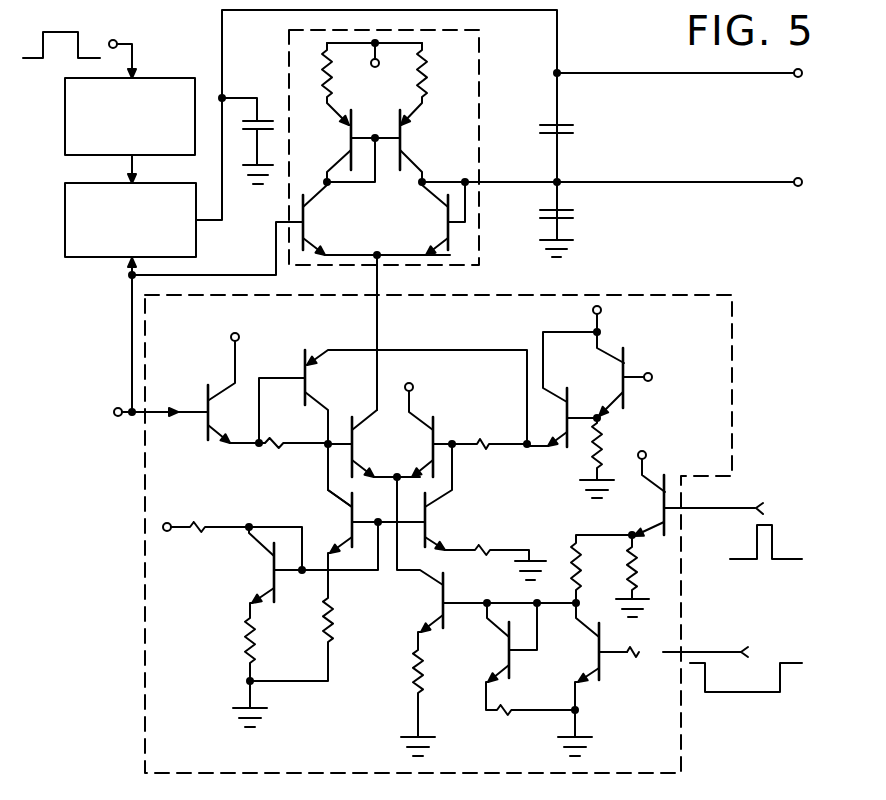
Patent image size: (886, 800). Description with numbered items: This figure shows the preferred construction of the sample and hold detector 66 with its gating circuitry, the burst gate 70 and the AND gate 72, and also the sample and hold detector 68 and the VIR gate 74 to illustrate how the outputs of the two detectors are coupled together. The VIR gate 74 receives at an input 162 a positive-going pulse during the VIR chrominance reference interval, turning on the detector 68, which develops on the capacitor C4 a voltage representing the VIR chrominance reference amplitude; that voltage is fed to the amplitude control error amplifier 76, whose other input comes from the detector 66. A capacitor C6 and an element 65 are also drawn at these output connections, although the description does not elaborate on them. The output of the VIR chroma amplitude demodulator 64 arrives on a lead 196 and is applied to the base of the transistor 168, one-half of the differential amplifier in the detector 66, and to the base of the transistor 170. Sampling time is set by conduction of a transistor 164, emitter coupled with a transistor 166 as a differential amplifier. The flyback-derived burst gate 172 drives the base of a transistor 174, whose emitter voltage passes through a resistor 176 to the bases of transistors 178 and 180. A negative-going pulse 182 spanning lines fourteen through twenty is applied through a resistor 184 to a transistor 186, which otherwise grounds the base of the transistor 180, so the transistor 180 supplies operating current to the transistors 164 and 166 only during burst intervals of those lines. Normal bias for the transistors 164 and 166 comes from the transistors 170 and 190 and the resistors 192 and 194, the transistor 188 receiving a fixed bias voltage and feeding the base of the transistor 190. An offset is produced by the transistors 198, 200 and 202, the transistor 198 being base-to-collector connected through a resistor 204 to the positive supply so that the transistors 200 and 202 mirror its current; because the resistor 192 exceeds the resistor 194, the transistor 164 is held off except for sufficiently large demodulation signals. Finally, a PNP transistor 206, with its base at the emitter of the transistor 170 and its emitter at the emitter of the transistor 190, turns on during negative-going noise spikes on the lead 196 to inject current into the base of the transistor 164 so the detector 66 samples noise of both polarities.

The input 162 is at (116, 41).
The VIR gate 74 is at (167, 78).
The sample and hold detector 68 is at (90, 258).
The capacitor C4 is at (257, 118).
The sample and hold detector 66 is at (423, 220).
The transistor 168 is at (306, 222).
The capacitor C6 is at (566, 125).
The capacitor 65 is at (572, 222).
The amplitude control error amplifier 76 is at (678, 127).
The burst gate 70 is at (442, 520).
The AND gate 72 is at (732, 297).
The VIR chroma amplitude demodulator 64 is at (77, 411).
The lead 196 is at (166, 407).
The transistor 170 is at (216, 442).
The resistor 192 is at (293, 431).
The PNP transistor 206 is at (308, 380).
The transistor 164 is at (356, 452).
The transistor 166 is at (437, 425).
The resistor 194 is at (509, 458).
The transistor 190 is at (581, 442).
The transistor 188 is at (620, 375).
The transistor 200 is at (350, 522).
The transistor 202 is at (428, 522).
The resistor 204 is at (221, 537).
The transistor 198 is at (272, 570).
The transistor 180 is at (441, 603).
The transistor 178 is at (507, 650).
The transistor 186 is at (597, 652).
The resistor 184 is at (645, 660).
The resistor 176 is at (570, 549).
The transistor 174 is at (653, 508).
The burst gate 172 is at (773, 540).
The negative-going pulse 182 is at (718, 696).